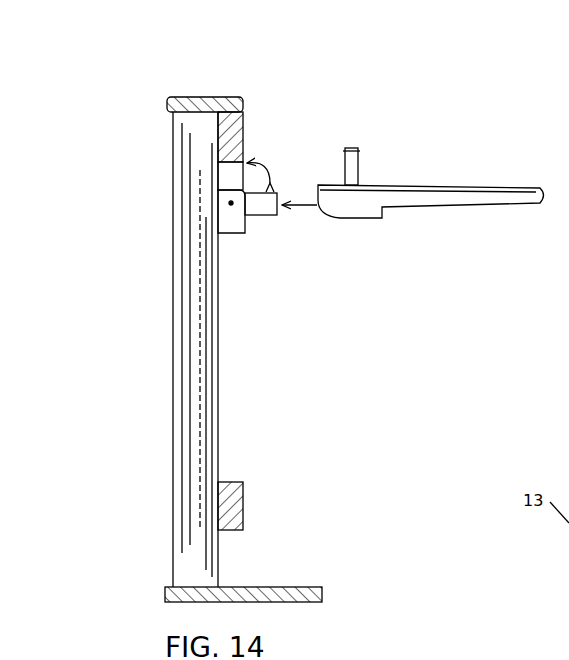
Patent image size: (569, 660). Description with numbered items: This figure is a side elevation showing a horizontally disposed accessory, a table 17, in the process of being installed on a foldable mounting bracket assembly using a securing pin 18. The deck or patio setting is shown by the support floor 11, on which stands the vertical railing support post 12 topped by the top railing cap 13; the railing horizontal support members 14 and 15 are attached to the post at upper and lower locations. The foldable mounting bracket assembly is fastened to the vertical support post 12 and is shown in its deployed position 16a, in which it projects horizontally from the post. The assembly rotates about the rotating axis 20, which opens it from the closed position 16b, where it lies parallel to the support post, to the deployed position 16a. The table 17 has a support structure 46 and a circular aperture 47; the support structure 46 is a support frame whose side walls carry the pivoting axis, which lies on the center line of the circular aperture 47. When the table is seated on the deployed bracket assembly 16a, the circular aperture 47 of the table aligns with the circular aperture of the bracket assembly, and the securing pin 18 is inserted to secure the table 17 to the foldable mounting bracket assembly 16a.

The support floor 11 is at (165, 590).
The vertical railing support post 12 is at (160, 220).
The top railing cap 13 is at (165, 92).
The railing horizontal support member 14 is at (235, 132).
The railing horizontal support member 15 is at (243, 511).
The foldable mounting bracket assembly in the deployed position 16a is at (275, 223).
The foldable mounting bracket assembly in the closed position 16b is at (262, 153).
The horizontally supported accessory (table) 17 is at (492, 222).
The securing pin 18 is at (370, 157).
The rotating axis 20 is at (229, 202).
The support structure 46 is at (368, 207).
The circular aperture 47 is at (350, 190).